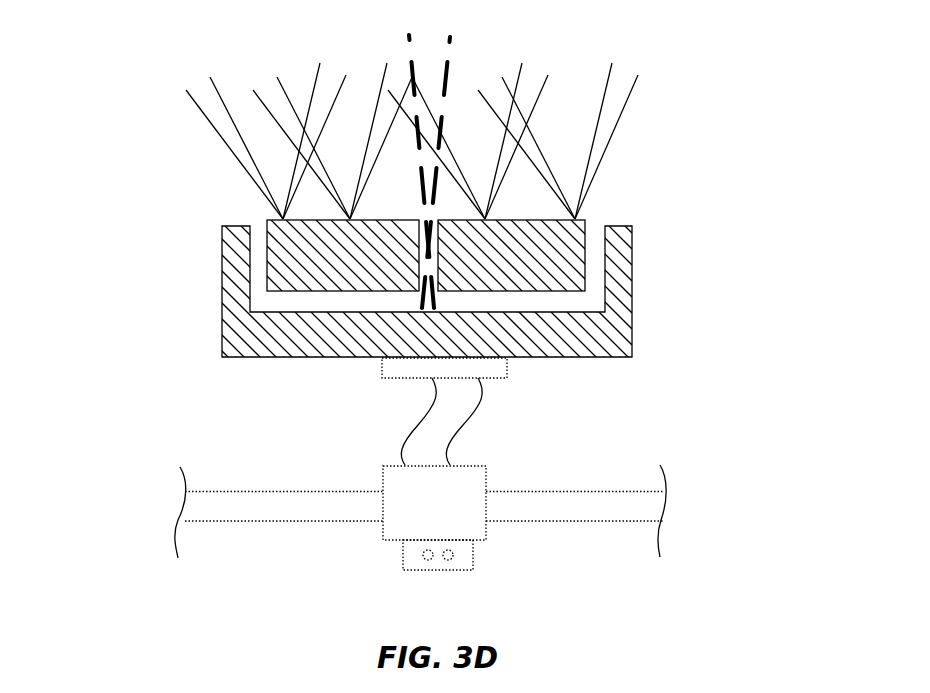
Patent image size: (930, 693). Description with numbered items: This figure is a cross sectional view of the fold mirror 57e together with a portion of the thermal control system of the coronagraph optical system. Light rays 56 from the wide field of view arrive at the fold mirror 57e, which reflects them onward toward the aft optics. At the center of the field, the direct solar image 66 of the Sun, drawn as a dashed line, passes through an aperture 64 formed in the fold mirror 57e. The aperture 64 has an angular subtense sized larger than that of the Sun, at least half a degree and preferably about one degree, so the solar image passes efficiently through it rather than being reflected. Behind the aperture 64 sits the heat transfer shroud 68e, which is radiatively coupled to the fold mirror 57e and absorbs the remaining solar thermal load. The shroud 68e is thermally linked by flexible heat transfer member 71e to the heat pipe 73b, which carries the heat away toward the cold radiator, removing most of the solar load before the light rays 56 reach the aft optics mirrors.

The light rays 56 is at (243, 57).
The direct solar image 66 is at (450, 62).
The fold mirror 57e is at (300, 263).
The heat transfer shroud 68e is at (260, 332).
The aperture 64 is at (447, 296).
The heat transfer member 71e is at (420, 433).
The heat pipe 73b is at (277, 503).